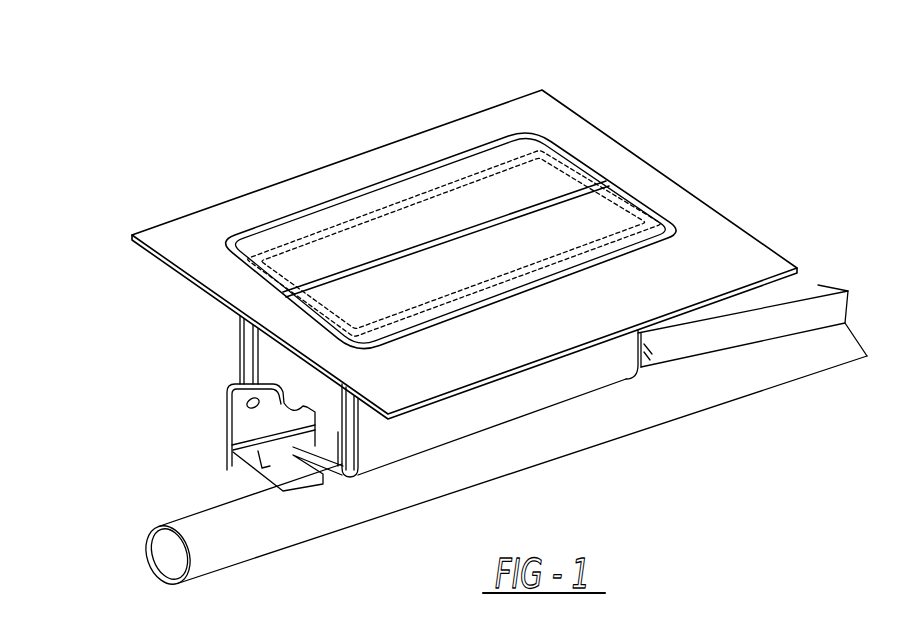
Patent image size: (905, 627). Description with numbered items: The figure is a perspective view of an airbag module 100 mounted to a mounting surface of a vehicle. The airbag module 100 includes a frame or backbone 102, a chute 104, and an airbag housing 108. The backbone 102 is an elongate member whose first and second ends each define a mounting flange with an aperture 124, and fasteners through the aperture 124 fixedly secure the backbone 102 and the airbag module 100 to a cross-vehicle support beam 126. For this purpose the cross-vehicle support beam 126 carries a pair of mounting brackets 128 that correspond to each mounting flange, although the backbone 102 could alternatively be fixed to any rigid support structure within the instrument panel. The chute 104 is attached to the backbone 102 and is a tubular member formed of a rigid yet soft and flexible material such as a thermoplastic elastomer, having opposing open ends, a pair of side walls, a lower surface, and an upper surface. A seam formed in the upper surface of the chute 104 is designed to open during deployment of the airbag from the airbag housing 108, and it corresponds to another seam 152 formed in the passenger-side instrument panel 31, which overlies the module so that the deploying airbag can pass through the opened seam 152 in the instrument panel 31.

The airbag module 100 is at (776, 127).
The passenger-side instrument panel 31 is at (590, 137).
The seam 152 is at (403, 263).
The cross-vehicle support beam 126 is at (755, 370).
The chute 104 is at (533, 387).
The mounting brackets 128 is at (639, 355).
The backbone 102 is at (228, 416).
The aperture 124 is at (257, 406).
The airbag housing 108 is at (340, 427).